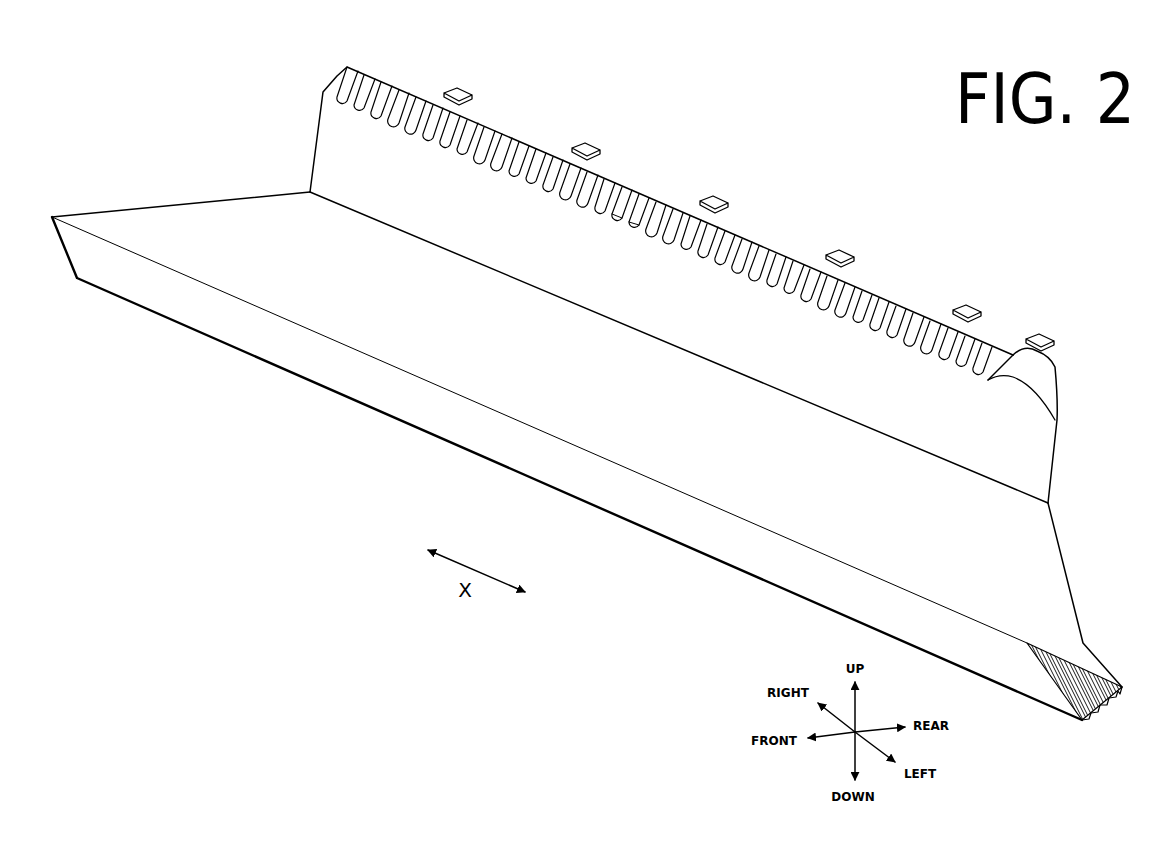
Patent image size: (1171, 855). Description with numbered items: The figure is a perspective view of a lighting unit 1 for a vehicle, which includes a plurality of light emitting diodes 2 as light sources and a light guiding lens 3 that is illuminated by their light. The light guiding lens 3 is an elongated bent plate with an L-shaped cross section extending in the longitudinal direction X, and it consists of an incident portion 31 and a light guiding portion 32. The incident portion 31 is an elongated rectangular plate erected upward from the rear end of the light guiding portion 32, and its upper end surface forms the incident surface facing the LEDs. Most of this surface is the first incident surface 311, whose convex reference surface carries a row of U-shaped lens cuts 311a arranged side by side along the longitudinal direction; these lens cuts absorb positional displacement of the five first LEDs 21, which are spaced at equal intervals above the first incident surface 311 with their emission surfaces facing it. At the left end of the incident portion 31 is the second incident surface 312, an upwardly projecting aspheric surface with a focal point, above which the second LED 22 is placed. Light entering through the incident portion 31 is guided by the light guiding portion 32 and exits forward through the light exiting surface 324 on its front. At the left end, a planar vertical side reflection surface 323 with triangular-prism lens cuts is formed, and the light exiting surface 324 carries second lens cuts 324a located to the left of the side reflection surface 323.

The lighting unit 1 is at (851, 89).
The light emitting diodes 2 is at (770, 196).
The first LEDs 21 is at (462, 85).
The second LED 22 is at (1047, 330).
The light guiding lens 3 is at (215, 345).
The incident portion 31 is at (328, 138).
The first incident surface 311 is at (410, 98).
The lens cuts 311a is at (665, 205).
The second incident surface 312 is at (1045, 378).
The light guiding portion 32 is at (212, 213).
The side reflection surface 323 is at (1065, 565).
The light exiting surface 324 is at (403, 403).
The second lens cuts 324a is at (1065, 710).